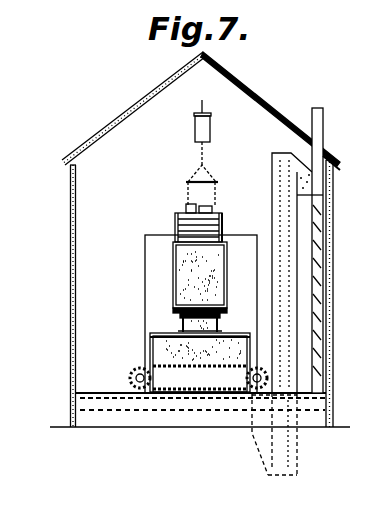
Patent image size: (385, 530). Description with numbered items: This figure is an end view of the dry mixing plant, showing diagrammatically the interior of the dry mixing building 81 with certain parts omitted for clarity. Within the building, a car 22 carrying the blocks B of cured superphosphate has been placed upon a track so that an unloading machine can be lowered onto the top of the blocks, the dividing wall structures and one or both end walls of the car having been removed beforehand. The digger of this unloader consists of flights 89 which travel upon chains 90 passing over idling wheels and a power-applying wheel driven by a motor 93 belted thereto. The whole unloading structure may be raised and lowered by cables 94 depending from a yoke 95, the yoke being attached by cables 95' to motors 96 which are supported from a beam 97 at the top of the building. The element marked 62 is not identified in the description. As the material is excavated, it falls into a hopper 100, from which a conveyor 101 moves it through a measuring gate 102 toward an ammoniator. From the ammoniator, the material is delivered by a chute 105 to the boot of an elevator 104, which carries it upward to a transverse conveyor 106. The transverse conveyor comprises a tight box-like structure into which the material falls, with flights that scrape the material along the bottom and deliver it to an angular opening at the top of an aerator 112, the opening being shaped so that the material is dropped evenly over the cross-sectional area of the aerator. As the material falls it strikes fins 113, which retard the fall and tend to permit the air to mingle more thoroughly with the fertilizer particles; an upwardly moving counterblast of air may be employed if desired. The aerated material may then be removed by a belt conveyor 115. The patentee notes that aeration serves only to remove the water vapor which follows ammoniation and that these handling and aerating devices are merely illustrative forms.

The dry mixing building 81 is at (121, 116).
The car 22 is at (170, 296).
The block B is at (220, 283).
The discharge support 62 is at (216, 333).
The flights 89 is at (176, 226).
The chains 90 is at (222, 226).
The motor 93 is at (188, 203).
The cables 94 is at (213, 205).
The yoke 95 is at (216, 175).
The cables 95' is at (226, 143).
The motors 96 is at (211, 124).
The beam 97 is at (203, 112).
The hopper 100 is at (166, 347).
The conveyor 101 is at (158, 362).
The measuring gate 102 is at (253, 351).
The elevator 104 is at (283, 152).
The chute 105 is at (252, 437).
The transverse conveyor 106 is at (325, 160).
The aerator 112 is at (334, 378).
The fins 113 is at (319, 250).
The belt conveyor 115 is at (118, 412).